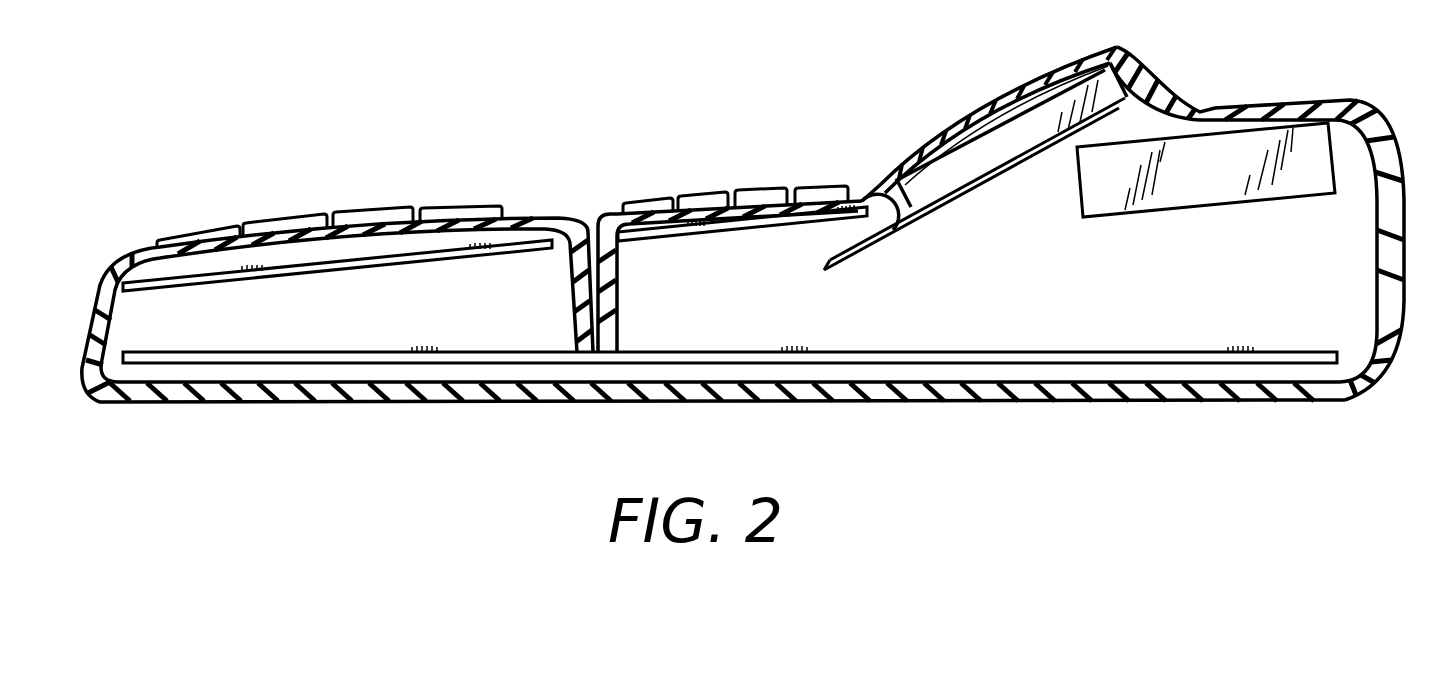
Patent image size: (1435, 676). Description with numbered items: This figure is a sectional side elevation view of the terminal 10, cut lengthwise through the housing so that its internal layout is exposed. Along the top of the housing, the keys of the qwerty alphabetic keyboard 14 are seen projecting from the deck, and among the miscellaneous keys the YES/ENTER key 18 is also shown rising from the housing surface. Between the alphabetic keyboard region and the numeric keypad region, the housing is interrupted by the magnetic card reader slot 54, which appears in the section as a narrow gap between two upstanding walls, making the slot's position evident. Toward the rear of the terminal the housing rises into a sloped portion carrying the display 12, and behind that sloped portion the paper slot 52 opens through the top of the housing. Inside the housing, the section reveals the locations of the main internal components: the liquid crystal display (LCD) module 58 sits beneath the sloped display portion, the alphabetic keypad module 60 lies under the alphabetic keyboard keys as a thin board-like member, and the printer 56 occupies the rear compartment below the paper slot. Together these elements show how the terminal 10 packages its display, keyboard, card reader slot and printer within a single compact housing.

The terminal 10 is at (325, 128).
The display 12 is at (1000, 94).
The qwerty alphabetic keyboard 14 is at (762, 190).
The YES/ENTER key 18 is at (463, 208).
The paper slot 52 is at (1279, 107).
The magnetic card reader slot 54 is at (585, 226).
The printer 56 is at (1212, 204).
The liquid crystal display (LCD) module 58 is at (1020, 137).
The alphabetic keypad module 60 is at (330, 262).